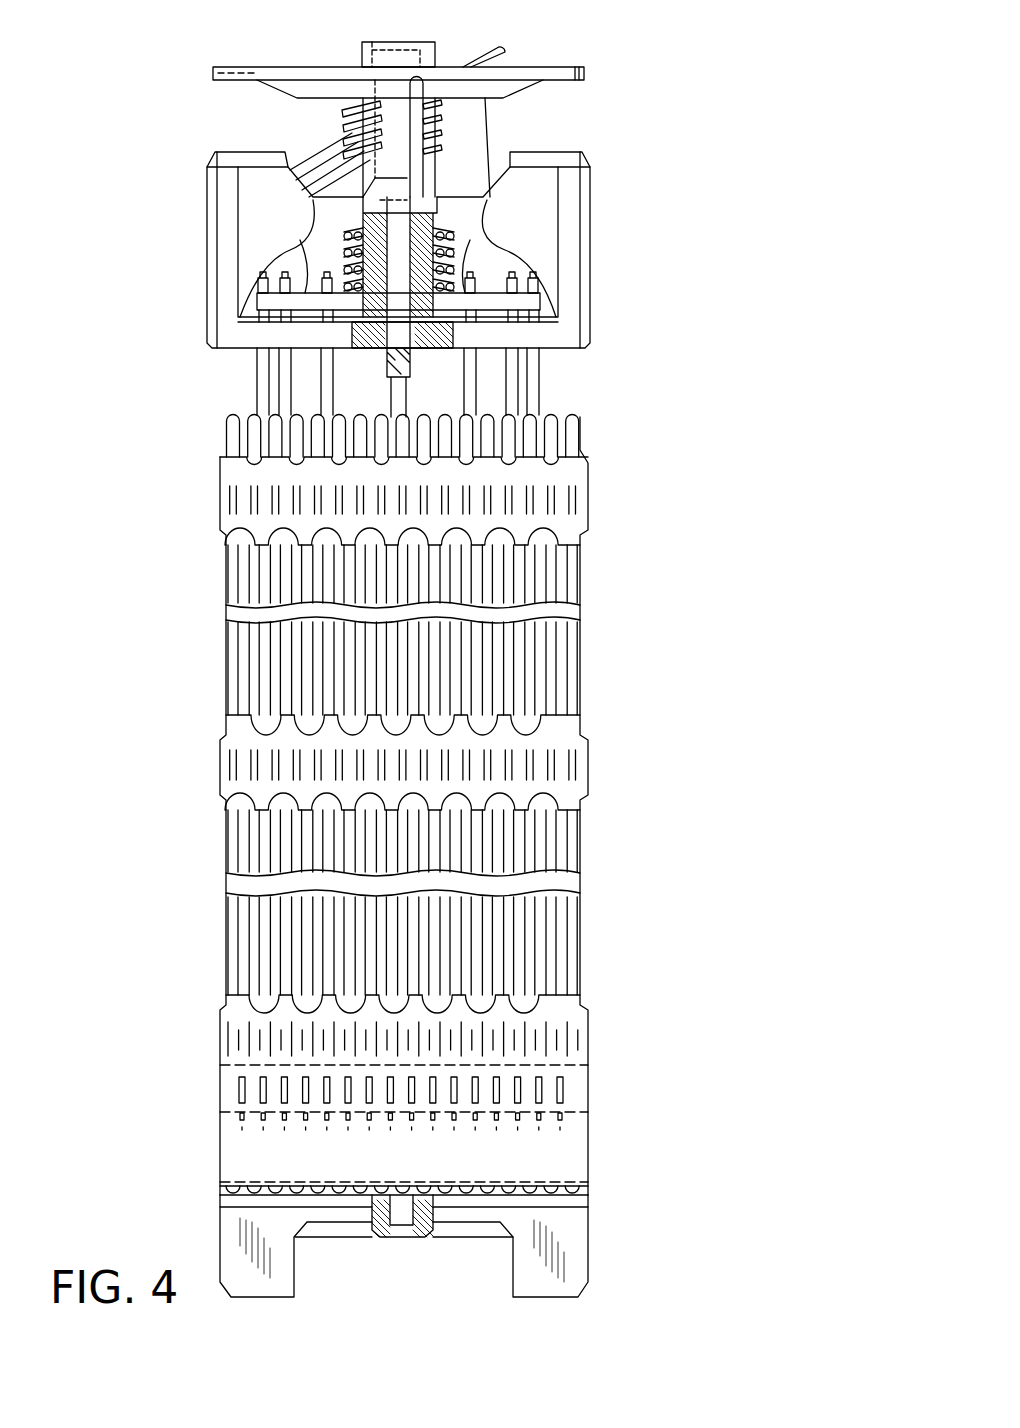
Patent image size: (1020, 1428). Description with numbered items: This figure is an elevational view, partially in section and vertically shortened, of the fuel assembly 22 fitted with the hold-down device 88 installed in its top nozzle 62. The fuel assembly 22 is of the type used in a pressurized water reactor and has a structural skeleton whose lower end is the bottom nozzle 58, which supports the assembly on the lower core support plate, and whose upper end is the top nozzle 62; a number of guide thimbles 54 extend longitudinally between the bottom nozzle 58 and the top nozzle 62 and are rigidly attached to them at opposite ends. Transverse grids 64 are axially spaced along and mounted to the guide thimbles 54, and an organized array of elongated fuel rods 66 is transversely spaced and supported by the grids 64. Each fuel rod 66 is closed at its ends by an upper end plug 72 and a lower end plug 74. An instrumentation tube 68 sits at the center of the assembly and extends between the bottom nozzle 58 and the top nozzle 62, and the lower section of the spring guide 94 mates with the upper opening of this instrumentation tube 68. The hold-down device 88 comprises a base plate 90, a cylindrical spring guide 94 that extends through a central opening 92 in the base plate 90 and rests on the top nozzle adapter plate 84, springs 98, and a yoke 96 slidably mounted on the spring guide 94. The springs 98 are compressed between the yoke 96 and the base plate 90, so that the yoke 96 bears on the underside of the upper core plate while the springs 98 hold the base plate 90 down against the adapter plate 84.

The fuel assembly 22 is at (603, 348).
The guide thimbles 54 is at (535, 378).
The bottom nozzle 58 is at (590, 1285).
The top nozzle 62 is at (596, 173).
The transverse grids 64 is at (578, 512).
The fuel rods 66 is at (572, 452).
The instrumentation tube 68 is at (400, 1215).
The upper end plug 72 is at (232, 421).
The lower end plug 74 is at (480, 1200).
The adapter plate 84 is at (268, 346).
The hold-down device 88 is at (600, 71).
The base plate 90 is at (305, 300).
The central opening 92 is at (470, 282).
The spring guide 94 is at (362, 56).
The yoke 96 is at (463, 52).
The springs 98 is at (342, 128).